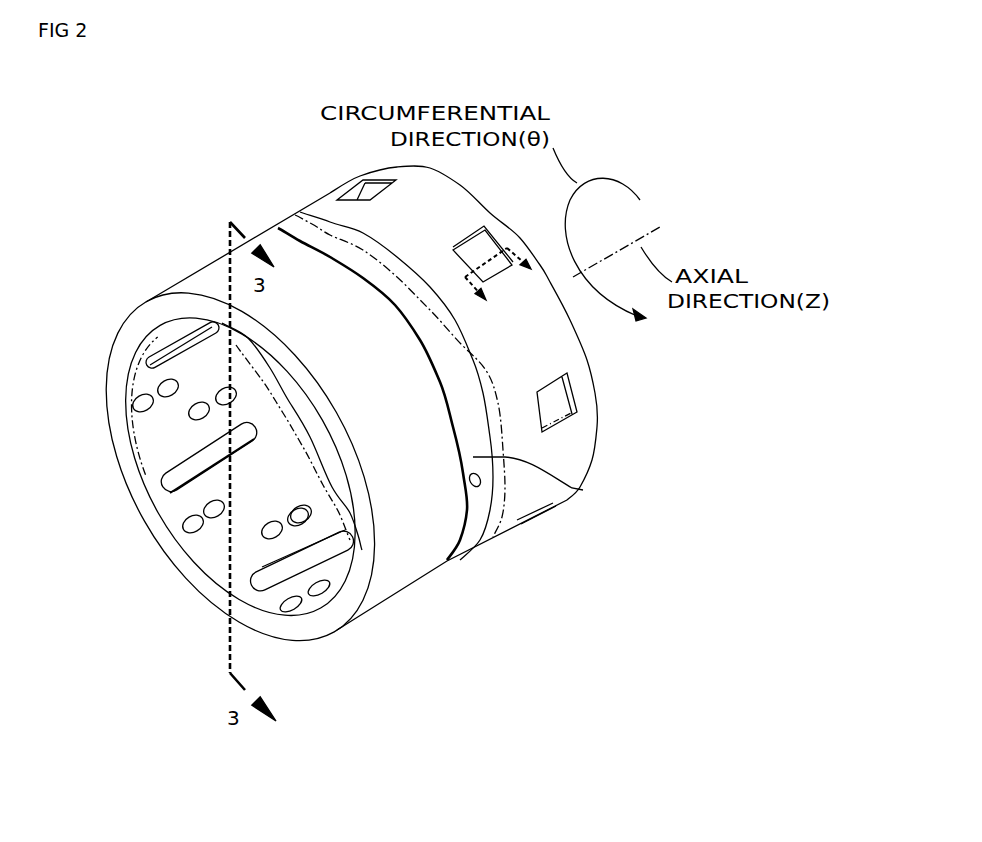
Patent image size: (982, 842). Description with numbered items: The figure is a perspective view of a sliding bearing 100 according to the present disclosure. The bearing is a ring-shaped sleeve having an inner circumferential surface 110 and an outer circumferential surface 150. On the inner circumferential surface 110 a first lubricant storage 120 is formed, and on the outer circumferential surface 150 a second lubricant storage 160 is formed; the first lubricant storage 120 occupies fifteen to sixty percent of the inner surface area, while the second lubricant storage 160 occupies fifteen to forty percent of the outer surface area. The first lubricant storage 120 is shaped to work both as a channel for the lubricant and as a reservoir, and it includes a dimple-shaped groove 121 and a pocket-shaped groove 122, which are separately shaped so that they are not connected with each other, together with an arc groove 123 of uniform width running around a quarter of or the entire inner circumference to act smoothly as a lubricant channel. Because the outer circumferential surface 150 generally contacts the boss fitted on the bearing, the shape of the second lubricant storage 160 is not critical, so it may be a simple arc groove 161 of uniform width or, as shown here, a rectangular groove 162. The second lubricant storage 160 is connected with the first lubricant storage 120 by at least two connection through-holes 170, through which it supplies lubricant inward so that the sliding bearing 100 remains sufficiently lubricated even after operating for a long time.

The sliding bearing 100 is at (170, 179).
The inner circumferential surface 110 is at (240, 576).
The first lubricant storage 120 is at (202, 475).
The dimple-shaped groove 121 is at (265, 528).
The pocket-shaped groove 122 is at (176, 480).
The arc groove 123 is at (317, 492).
The outer circumferential surface 150 is at (218, 277).
The second lubricant storage 160 is at (590, 448).
The arc groove 161 is at (583, 490).
The rectangular groove 162 is at (552, 405).
The connection through-hole 170 is at (478, 487).